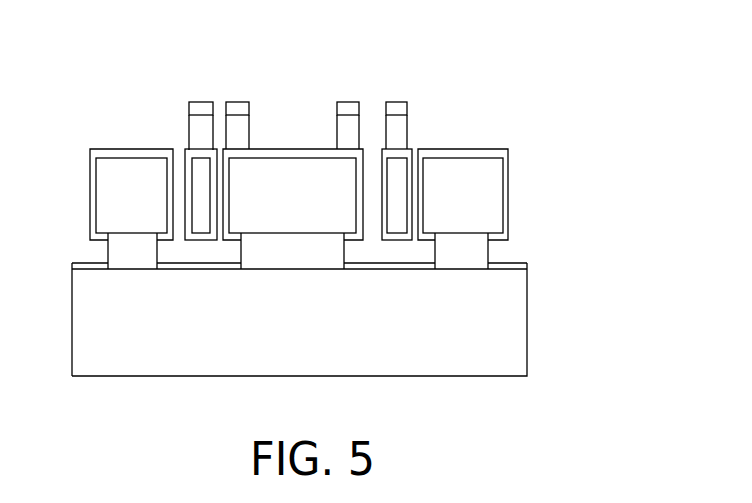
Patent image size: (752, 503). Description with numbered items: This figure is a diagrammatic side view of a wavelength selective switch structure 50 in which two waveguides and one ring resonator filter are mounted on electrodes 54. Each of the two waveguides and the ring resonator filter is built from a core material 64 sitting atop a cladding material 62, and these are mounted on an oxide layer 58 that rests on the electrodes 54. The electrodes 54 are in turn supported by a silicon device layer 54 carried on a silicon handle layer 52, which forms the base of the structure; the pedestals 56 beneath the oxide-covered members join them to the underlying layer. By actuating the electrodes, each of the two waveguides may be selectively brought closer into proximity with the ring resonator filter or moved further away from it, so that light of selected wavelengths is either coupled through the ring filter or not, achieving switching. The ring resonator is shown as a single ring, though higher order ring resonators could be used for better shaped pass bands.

The wavelength selective switch structure 50 is at (544, 69).
The silicon handle layer 52 is at (527, 322).
The electrodes / silicon device layer 54 is at (103, 207).
The bond pad / interconnect 56 is at (108, 252).
The oxide layer 58 is at (105, 148).
The cladding material 62 is at (188, 137).
The core material 64 is at (188, 103).